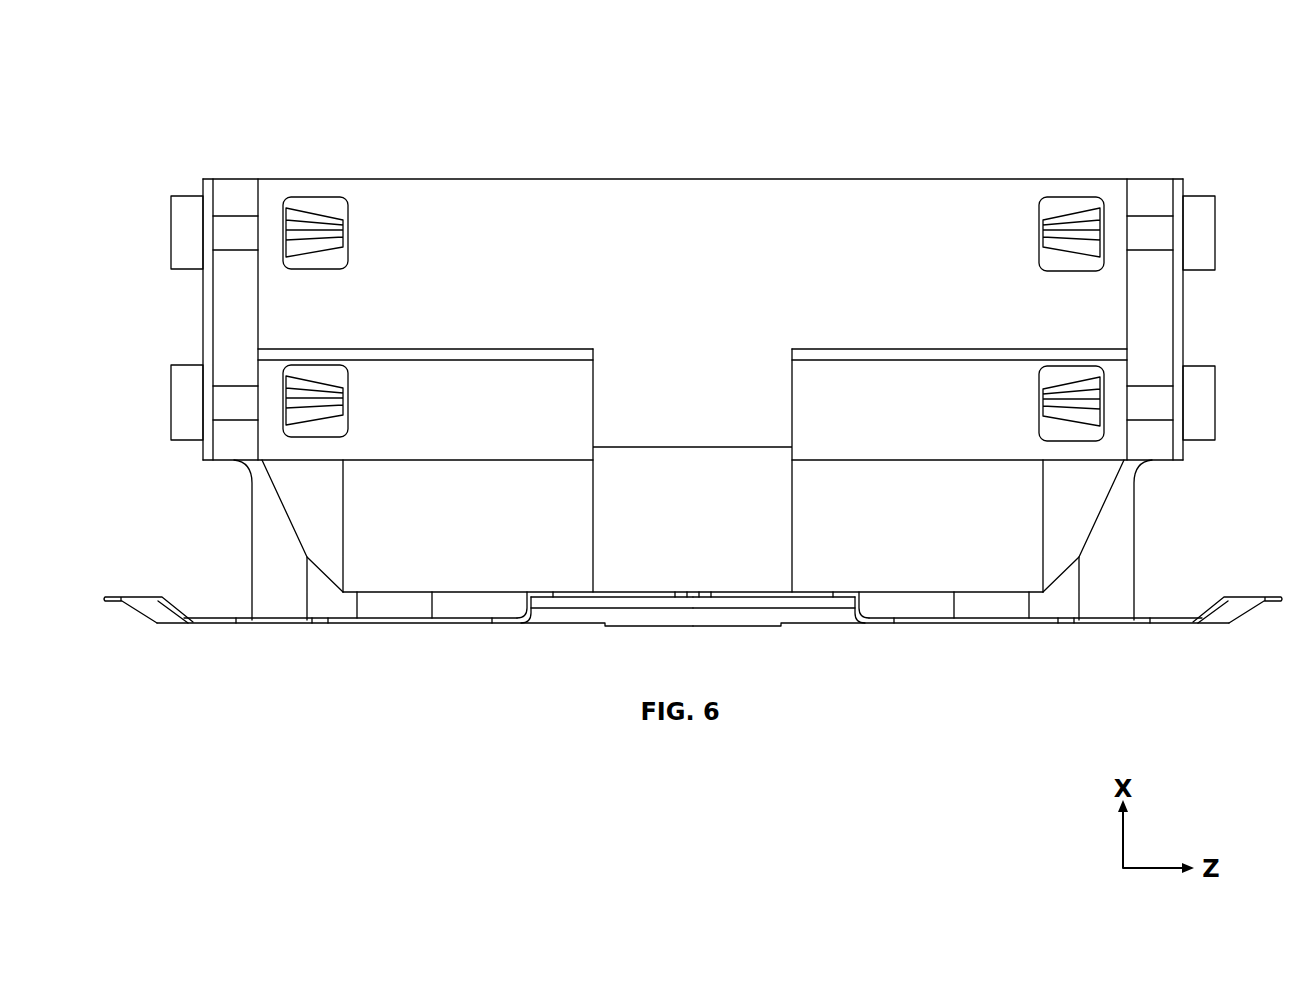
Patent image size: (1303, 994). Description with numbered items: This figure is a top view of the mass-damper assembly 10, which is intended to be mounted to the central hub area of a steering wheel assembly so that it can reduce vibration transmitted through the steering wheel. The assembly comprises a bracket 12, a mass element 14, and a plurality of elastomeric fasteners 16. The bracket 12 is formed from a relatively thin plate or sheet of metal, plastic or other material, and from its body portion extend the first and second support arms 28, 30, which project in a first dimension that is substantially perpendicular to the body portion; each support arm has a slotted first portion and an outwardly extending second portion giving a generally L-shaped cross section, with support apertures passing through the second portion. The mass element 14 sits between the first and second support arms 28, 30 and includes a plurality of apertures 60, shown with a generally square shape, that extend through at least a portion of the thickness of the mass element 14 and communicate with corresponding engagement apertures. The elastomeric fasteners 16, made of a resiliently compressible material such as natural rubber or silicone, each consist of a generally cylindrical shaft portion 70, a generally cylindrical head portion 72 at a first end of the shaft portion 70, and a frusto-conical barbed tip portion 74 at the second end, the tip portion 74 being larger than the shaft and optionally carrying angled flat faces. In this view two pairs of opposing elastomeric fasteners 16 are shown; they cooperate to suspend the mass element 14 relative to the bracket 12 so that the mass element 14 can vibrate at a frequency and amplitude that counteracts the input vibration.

The mass-damper assembly 10 is at (273, 77).
The bracket 12 is at (252, 531).
The mass element 14 is at (653, 178).
The elastomeric fasteners 16 is at (171, 228).
The first support arm 28 is at (1185, 455).
The second support arm 30 is at (203, 455).
The apertures 60 is at (348, 232).
The shaft portion 70 is at (228, 213).
The head portion 72 is at (187, 193).
The barbed tip portion 74 is at (318, 217).